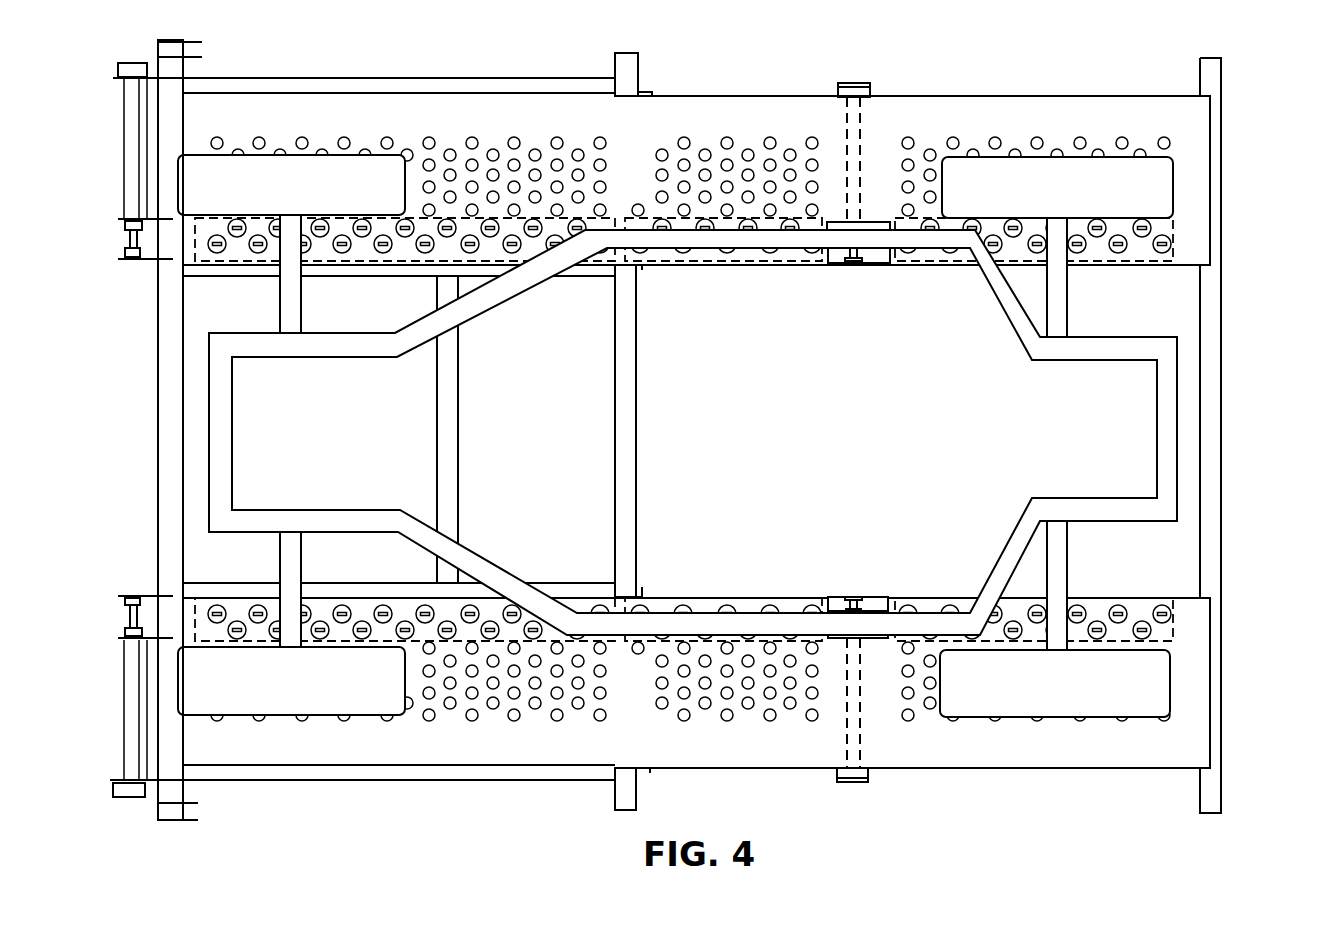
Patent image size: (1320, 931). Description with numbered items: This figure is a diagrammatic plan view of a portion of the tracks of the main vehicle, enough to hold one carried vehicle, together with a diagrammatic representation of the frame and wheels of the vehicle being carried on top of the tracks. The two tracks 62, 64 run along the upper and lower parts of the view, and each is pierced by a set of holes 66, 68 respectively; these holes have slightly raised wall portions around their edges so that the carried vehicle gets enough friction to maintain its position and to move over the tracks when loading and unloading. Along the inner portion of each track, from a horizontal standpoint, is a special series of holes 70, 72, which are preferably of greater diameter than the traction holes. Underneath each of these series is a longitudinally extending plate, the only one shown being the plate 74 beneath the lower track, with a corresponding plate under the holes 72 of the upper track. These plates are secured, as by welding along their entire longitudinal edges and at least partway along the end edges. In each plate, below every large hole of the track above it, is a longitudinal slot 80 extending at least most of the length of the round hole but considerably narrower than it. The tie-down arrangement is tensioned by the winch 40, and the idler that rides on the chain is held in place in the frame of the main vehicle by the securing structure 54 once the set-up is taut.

The winch 40 is at (133, 63).
The securing structure 54 is at (218, 598).
The track 62 is at (1058, 770).
The track 64 is at (1073, 96).
The holes 66 is at (772, 718).
The holes 68 is at (780, 140).
The holes 70 is at (1170, 617).
The holes 72 is at (208, 248).
The plate 74 is at (1152, 602).
The longitudinal slot 80 is at (1117, 608).